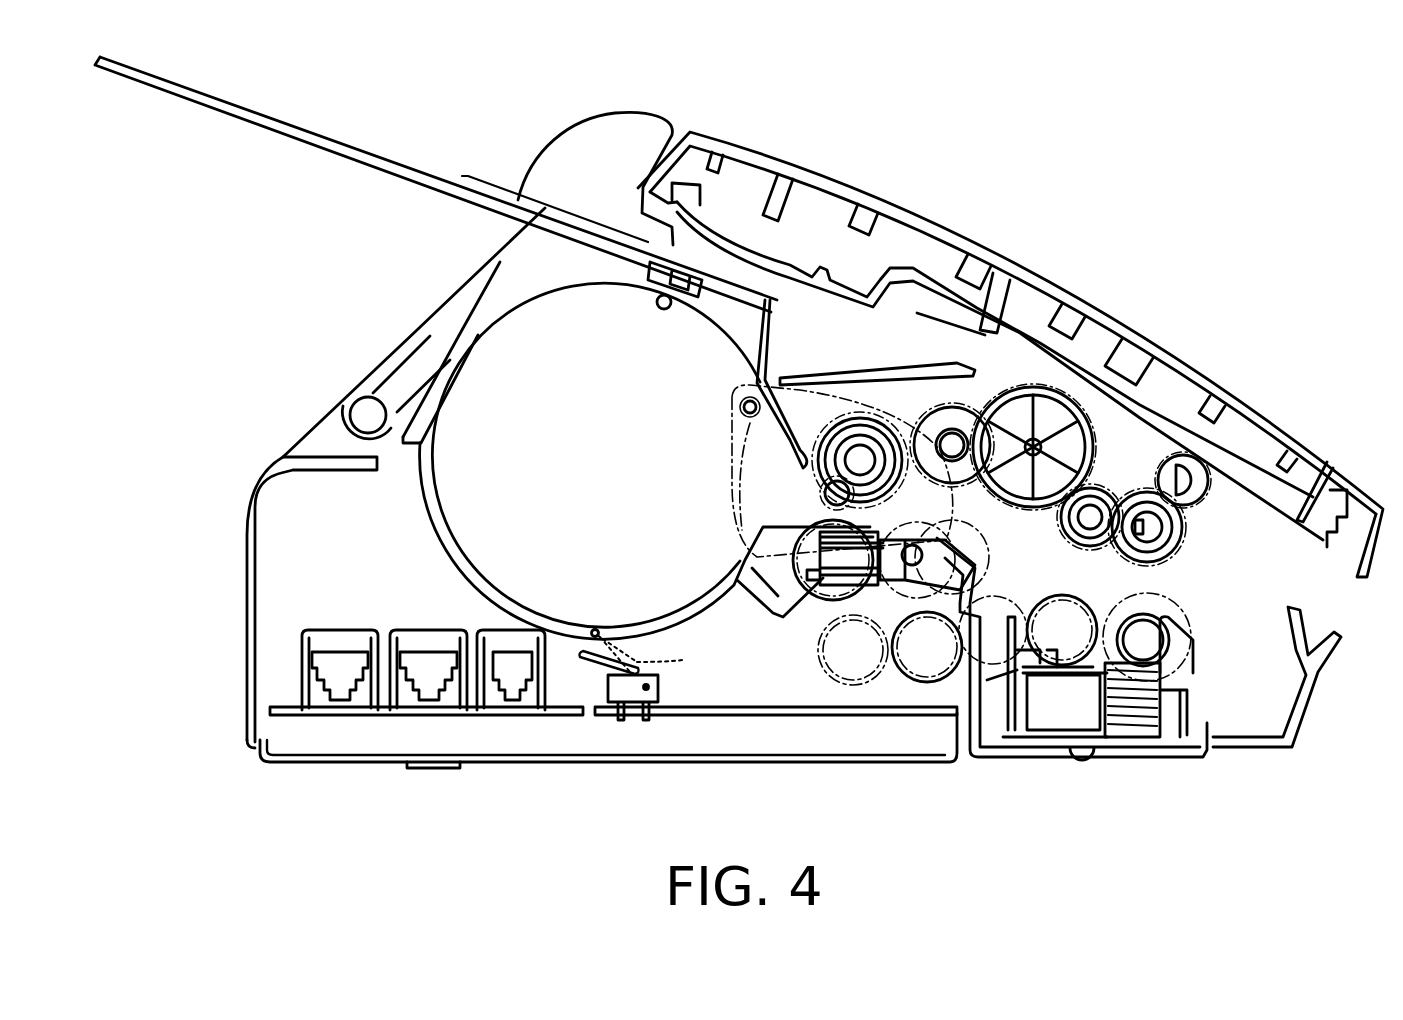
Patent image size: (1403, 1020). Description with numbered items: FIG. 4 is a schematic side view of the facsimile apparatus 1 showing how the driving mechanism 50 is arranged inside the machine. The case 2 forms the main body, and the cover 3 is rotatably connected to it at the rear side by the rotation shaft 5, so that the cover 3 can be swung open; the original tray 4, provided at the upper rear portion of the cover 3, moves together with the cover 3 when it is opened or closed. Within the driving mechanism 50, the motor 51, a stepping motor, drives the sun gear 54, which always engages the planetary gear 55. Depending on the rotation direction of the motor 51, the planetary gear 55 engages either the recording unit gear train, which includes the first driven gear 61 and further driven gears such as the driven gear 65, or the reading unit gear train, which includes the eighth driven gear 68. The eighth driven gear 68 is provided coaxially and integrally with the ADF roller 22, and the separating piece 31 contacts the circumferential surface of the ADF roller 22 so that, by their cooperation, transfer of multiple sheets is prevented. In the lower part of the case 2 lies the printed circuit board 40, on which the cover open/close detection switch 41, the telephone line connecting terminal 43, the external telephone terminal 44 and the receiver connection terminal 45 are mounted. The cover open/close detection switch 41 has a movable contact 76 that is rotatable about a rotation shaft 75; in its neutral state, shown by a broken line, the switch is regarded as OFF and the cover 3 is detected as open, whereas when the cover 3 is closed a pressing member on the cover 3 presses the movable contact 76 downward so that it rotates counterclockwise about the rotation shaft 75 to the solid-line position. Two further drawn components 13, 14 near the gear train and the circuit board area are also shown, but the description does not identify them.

The facsimile apparatus 1 is at (1168, 170).
The case 2 is at (250, 606).
The cover 3 is at (928, 227).
The original tray 4 is at (370, 153).
The rotation shaft 5 is at (372, 418).
The gear 13 is at (1143, 632).
The solenoid 14 is at (1167, 740).
The ADF roller 22 is at (1100, 420).
The separating piece 31 is at (1000, 460).
The printed circuit board 40 is at (303, 720).
The cover open/close detection switch 41 is at (660, 678).
The telephone line connecting terminal 43 is at (340, 663).
The external telephone terminal 44 is at (428, 663).
The receiver connection terminal 45 is at (510, 663).
The driving mechanism 50 is at (1192, 582).
The motor 51 is at (757, 490).
The sun gear 54 is at (995, 568).
The planetary gear 55 is at (778, 610).
The first driven gear 61 is at (823, 667).
The driven gear 65 is at (1192, 655).
The eighth driven gear 68 is at (1097, 427).
The rotation shaft 75 is at (648, 649).
The movable contact 76 is at (594, 662).